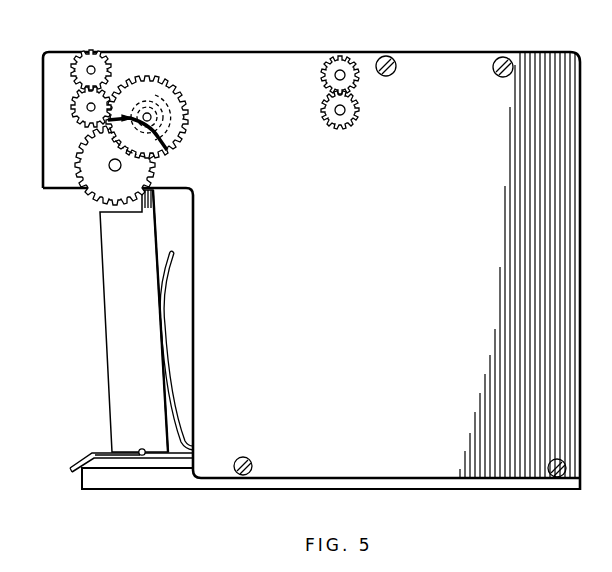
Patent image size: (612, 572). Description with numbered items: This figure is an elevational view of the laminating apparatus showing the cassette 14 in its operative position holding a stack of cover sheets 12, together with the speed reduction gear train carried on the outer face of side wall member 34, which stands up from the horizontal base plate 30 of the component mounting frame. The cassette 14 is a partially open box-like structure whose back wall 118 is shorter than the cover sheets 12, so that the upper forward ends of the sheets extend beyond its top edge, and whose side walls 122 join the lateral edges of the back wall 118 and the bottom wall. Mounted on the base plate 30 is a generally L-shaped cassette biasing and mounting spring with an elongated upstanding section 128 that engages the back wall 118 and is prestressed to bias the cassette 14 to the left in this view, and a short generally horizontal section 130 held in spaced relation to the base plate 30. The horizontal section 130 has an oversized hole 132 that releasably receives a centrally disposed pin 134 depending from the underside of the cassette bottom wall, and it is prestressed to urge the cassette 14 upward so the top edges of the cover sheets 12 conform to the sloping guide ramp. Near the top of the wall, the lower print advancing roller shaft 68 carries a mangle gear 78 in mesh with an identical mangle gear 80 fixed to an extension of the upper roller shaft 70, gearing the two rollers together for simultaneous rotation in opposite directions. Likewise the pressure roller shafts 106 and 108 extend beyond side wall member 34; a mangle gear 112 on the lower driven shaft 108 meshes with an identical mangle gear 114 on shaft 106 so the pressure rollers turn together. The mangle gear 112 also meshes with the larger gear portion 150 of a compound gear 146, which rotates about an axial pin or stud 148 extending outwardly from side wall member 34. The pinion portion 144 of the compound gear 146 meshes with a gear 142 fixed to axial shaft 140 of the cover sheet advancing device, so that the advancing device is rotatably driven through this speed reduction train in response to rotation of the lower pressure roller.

The cover sheet 12 is at (152, 198).
The cassette 14 is at (131, 321).
The base plate 30 is at (185, 480).
The side wall member 34 is at (452, 65).
The axial shaft 68 is at (345, 111).
The axial shaft 70 is at (344, 77).
The mangle gear 78 is at (322, 114).
The mangle gear 80 is at (322, 66).
The axial shaft 106 is at (95, 70).
The axial shaft 108 is at (88, 110).
The mangle gear 112 is at (73, 98).
The mangle gear 114 is at (105, 53).
The back wall 118 is at (157, 237).
The side walls 122 is at (125, 374).
The upstanding section 128 is at (173, 340).
The horizontal section 130 is at (105, 450).
The oversized hole 132 is at (128, 456).
The pin 134 is at (142, 457).
The axial shaft 140 is at (116, 171).
The gear 142 is at (93, 195).
The pinion portion 144 is at (187, 113).
The compound gear 146 is at (181, 147).
The axial pin or stud 148 is at (151, 114).
The larger gear portion 150 is at (183, 129).